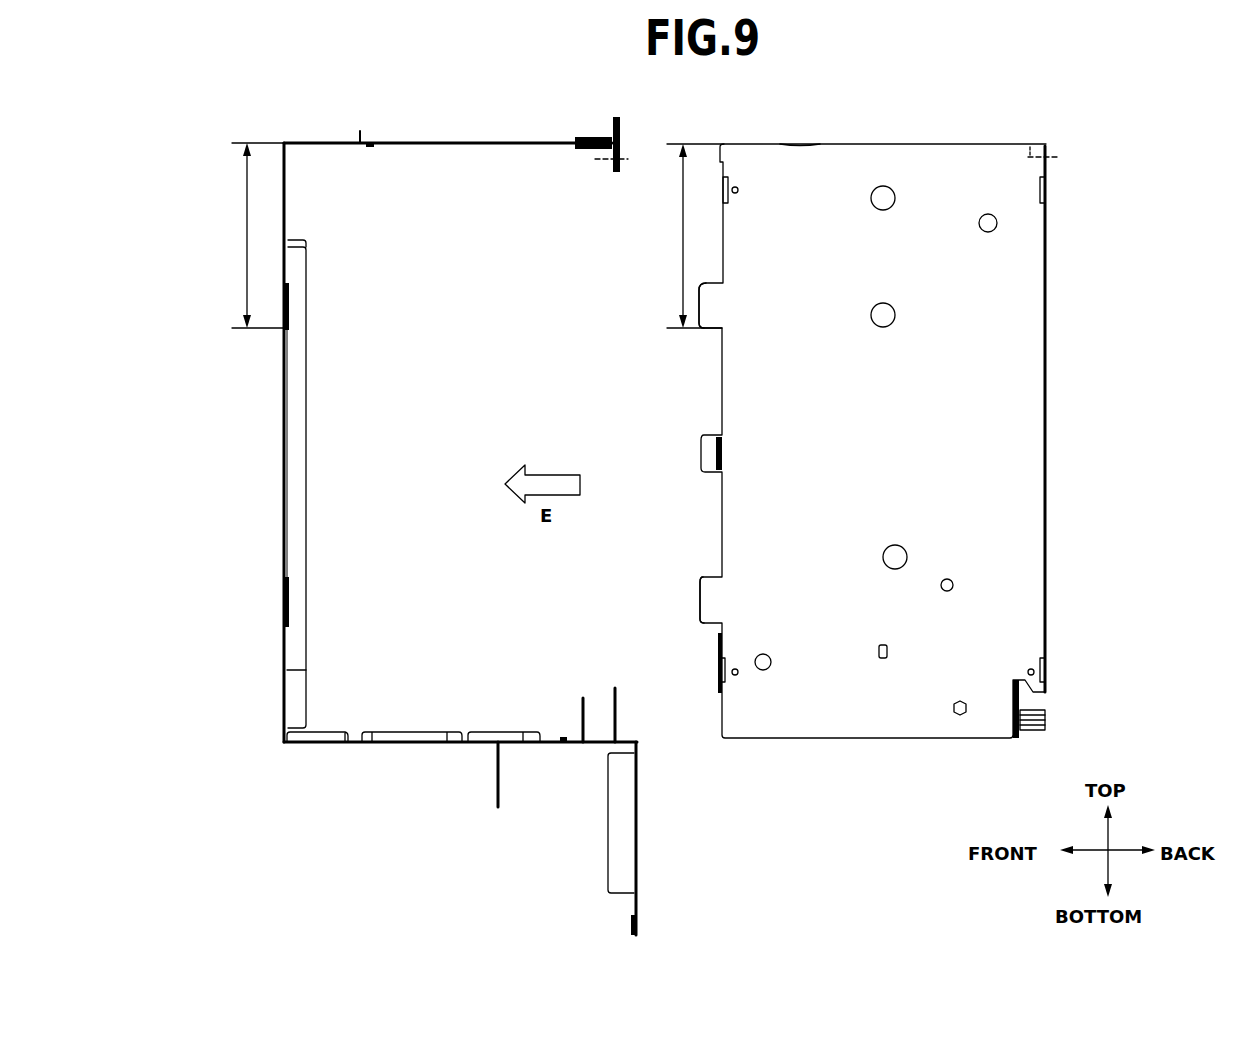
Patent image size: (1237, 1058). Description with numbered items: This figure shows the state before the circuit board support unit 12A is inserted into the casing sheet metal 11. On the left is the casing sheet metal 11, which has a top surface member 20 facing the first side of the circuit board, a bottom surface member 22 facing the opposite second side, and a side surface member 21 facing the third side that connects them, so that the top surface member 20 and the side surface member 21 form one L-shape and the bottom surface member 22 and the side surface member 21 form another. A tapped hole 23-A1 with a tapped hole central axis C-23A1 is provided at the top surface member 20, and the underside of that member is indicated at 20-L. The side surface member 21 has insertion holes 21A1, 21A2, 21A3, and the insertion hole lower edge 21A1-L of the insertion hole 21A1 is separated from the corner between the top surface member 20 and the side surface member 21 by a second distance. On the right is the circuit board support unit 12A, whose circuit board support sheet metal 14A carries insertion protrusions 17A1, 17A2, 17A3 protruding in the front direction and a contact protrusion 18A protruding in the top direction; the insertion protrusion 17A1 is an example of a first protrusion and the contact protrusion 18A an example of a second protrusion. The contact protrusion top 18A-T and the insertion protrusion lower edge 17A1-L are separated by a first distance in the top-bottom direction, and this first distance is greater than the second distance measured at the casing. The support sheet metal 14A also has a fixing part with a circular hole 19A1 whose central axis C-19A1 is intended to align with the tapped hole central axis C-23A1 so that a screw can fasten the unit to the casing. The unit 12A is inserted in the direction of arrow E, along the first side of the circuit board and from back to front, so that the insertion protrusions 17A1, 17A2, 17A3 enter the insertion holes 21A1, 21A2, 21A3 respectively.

The casing sheet metal 11 is at (270, 755).
The top surface member 20 is at (404, 142).
The top plate lower surface 20-L is at (498, 152).
The tapped hole 23-A1 is at (605, 138).
The tapped hole central axis C-23A1 is at (598, 162).
The side surface member 21 is at (283, 688).
The insertion hole 21A1 is at (283, 315).
The insertion hole lower edge 21A1-L is at (293, 336).
The insertion hole 21A2 is at (283, 452).
The insertion hole 21A3 is at (283, 600).
The bottom surface member 22 is at (408, 745).
The circuit board support unit 12A is at (883, 760).
The circuit board support sheet metal 14A is at (1032, 276).
The contact protrusion 18A is at (780, 142).
The contact protrusion top 18A-T is at (800, 132).
The circular hole 19A1 is at (1048, 152).
The central axis of the circular hole C-19A1 is at (1030, 146).
The insertion protrusion 17A1 is at (708, 306).
The insertion protrusion lower edge 17A1-L is at (712, 345).
The insertion protrusion 17A2 is at (712, 462).
The insertion protrusion 17A3 is at (712, 605).